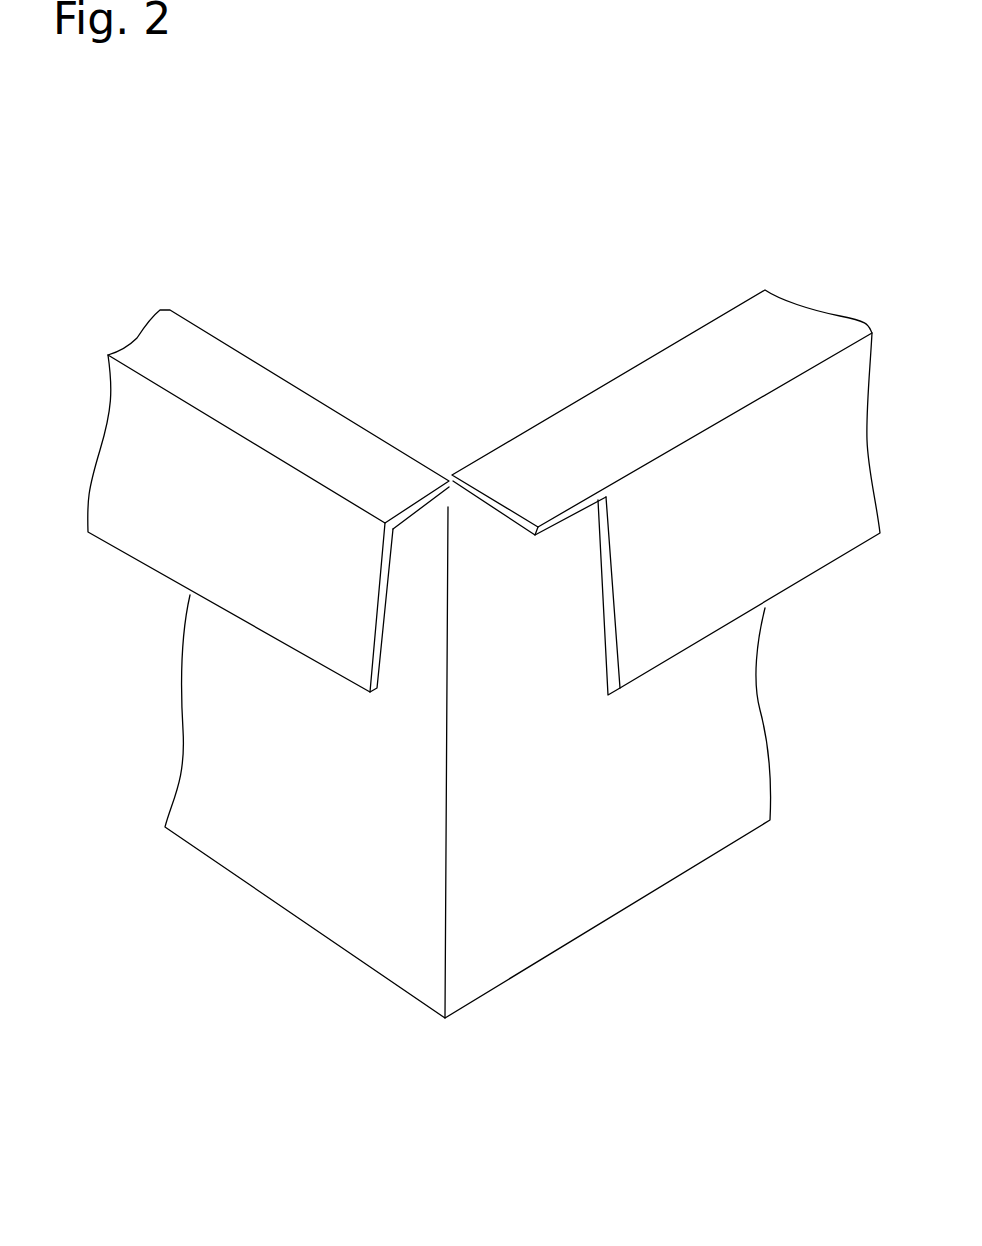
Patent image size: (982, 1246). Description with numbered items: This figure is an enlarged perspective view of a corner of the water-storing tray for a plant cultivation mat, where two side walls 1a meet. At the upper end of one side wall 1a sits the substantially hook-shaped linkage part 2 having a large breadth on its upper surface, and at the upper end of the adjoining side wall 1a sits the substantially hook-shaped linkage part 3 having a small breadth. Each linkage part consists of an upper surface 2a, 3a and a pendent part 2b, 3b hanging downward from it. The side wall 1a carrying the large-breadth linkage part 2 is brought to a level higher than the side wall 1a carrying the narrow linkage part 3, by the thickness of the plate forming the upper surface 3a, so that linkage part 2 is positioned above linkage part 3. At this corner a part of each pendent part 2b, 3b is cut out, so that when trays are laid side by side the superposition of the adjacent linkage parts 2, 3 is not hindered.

The side wall 1a is at (303, 818).
The linkage part 2 is at (666, 461).
The upper surface 2a is at (620, 418).
The pendent part 2b is at (777, 522).
The linkage part 3 is at (253, 442).
The upper surface 3a is at (312, 425).
The pendent part 3b is at (147, 532).